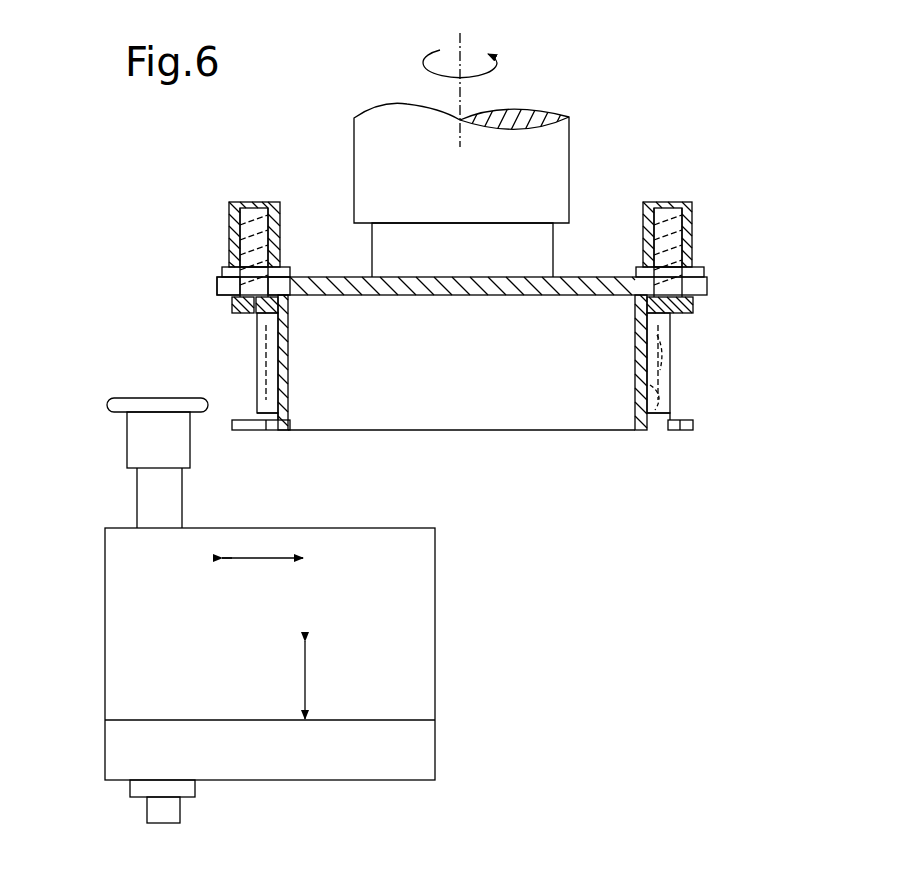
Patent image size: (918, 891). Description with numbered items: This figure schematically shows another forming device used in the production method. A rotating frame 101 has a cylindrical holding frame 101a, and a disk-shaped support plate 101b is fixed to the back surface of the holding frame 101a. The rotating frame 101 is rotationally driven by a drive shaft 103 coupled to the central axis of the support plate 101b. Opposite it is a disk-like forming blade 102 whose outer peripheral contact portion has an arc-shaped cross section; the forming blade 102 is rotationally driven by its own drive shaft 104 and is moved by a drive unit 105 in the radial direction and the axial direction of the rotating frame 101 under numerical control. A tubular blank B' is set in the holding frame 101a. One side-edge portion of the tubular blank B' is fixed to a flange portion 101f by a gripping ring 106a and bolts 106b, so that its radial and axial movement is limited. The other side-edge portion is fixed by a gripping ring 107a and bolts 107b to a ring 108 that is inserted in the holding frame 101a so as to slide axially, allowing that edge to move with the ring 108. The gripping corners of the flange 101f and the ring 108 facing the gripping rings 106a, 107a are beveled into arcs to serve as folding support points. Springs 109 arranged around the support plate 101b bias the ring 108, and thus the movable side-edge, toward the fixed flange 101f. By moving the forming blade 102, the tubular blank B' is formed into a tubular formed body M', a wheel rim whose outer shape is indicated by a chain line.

The rotating frame 101 is at (343, 278).
The cylindrical holding frame 101a is at (290, 376).
The disk-shaped support plate 101b is at (600, 277).
The flange portion 101f is at (284, 432).
The forming blade 102 is at (140, 397).
The drive shaft 103 is at (560, 145).
The drive shaft 104 is at (140, 497).
The drive unit 105 is at (430, 600).
The gripping ring 106a is at (255, 413).
The bolts 106b is at (240, 432).
The gripping ring 107a is at (243, 314).
The bolts 107b is at (236, 307).
The ring 108 is at (283, 306).
The springs 109 is at (233, 224).
The tubular blank B' is at (702, 350).
The tubular formed body M' is at (702, 392).